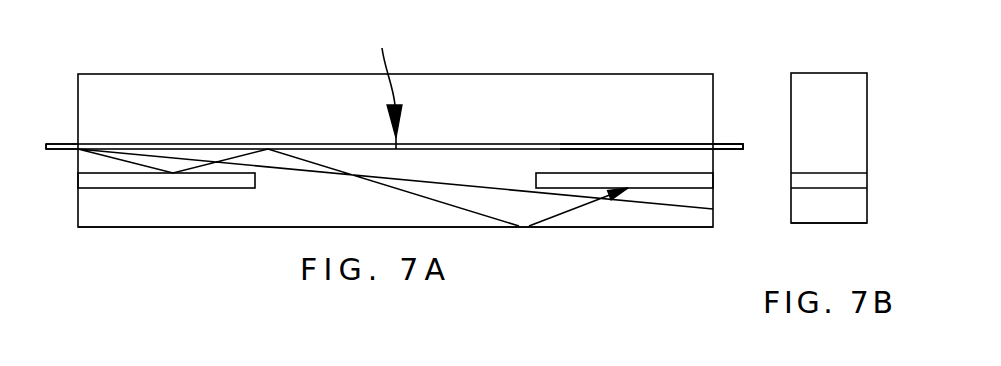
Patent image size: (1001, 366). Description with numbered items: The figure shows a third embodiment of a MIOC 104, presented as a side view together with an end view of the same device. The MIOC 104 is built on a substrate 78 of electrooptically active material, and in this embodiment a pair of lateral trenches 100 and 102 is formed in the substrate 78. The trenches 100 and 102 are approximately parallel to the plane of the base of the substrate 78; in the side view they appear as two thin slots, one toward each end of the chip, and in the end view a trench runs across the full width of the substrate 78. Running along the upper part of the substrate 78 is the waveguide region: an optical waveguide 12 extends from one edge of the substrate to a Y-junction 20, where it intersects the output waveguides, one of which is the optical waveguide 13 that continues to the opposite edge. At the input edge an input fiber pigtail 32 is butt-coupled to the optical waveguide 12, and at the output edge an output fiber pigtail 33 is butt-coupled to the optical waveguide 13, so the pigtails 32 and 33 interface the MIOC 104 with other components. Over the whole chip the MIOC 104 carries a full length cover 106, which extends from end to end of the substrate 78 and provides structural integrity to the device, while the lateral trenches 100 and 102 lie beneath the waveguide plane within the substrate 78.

In FIG. 7A, the optical waveguide 12 is at (180, 143).
In FIG. 7A, the optical waveguide 13 is at (612, 143).
In FIG. 7A, the Y-junction 20 is at (384, 88).
In FIG. 7A, the input fiber pigtail 32 is at (59, 143).
In FIG. 7A, the output fiber pigtail 33 is at (728, 142).
In FIG. 7A, the substrate 78 is at (202, 228).
In FIG. 7B, the substrate 78 is at (791, 203).
In FIG. 7A, the lateral trench 100 is at (123, 189).
In FIG. 7B, the lateral trench 100 is at (817, 173).
In FIG. 7A, the lateral trench 102 is at (642, 188).
In FIG. 7A, the MIOC 104 is at (508, 255).
In FIG. 7A, the full length cover 106 is at (515, 73).
In FIG. 7B, the full length cover 106 is at (791, 86).